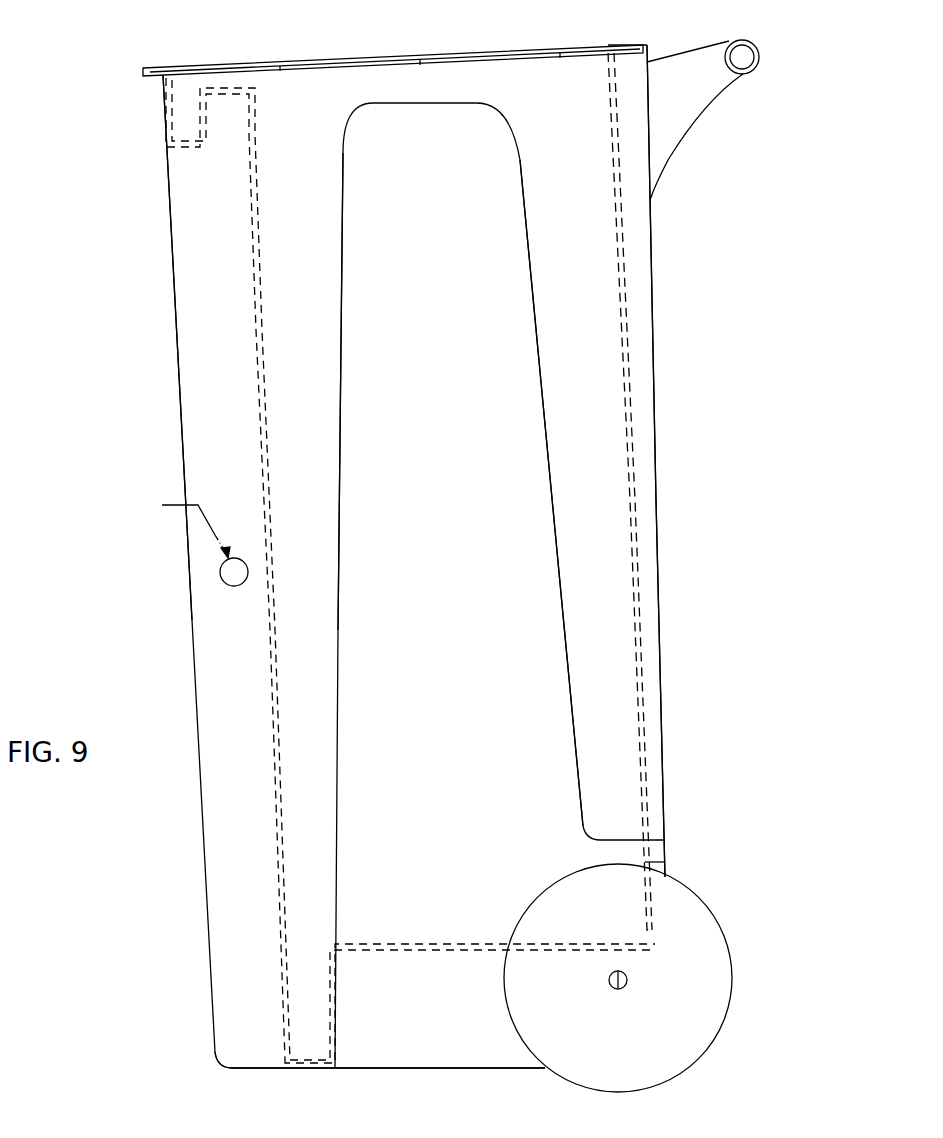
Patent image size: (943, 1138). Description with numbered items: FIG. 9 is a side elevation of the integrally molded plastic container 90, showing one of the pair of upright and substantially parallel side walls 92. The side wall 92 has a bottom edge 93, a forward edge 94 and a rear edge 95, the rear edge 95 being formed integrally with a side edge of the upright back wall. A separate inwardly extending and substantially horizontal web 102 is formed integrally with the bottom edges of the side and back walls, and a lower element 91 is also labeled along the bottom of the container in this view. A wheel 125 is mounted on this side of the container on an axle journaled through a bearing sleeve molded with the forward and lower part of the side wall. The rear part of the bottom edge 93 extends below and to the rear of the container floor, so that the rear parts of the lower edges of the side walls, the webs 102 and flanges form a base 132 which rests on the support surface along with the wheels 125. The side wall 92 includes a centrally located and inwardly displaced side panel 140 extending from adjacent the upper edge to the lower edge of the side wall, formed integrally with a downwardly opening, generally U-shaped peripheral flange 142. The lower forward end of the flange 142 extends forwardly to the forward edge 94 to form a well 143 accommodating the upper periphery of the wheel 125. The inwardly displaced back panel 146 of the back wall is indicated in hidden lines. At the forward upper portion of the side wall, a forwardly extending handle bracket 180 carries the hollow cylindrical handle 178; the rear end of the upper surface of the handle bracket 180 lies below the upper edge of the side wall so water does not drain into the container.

The container 90 is at (182, 674).
The rear edge 95 is at (176, 386).
The forward edge 94 is at (660, 567).
The side panel 140 is at (499, 585).
The peripheral flange 142 is at (354, 638).
The well 143 is at (664, 866).
The back panel 146 is at (262, 132).
The web 102 is at (316, 1070).
The handle 178 is at (756, 47).
The handle bracket 180 is at (696, 96).
The wheel 125 is at (727, 937).
The base 132 is at (200, 1075).
The bottom wall 91 is at (275, 1075).
The bottom edge 93 is at (353, 1068).
The side wall 92 is at (452, 1028).